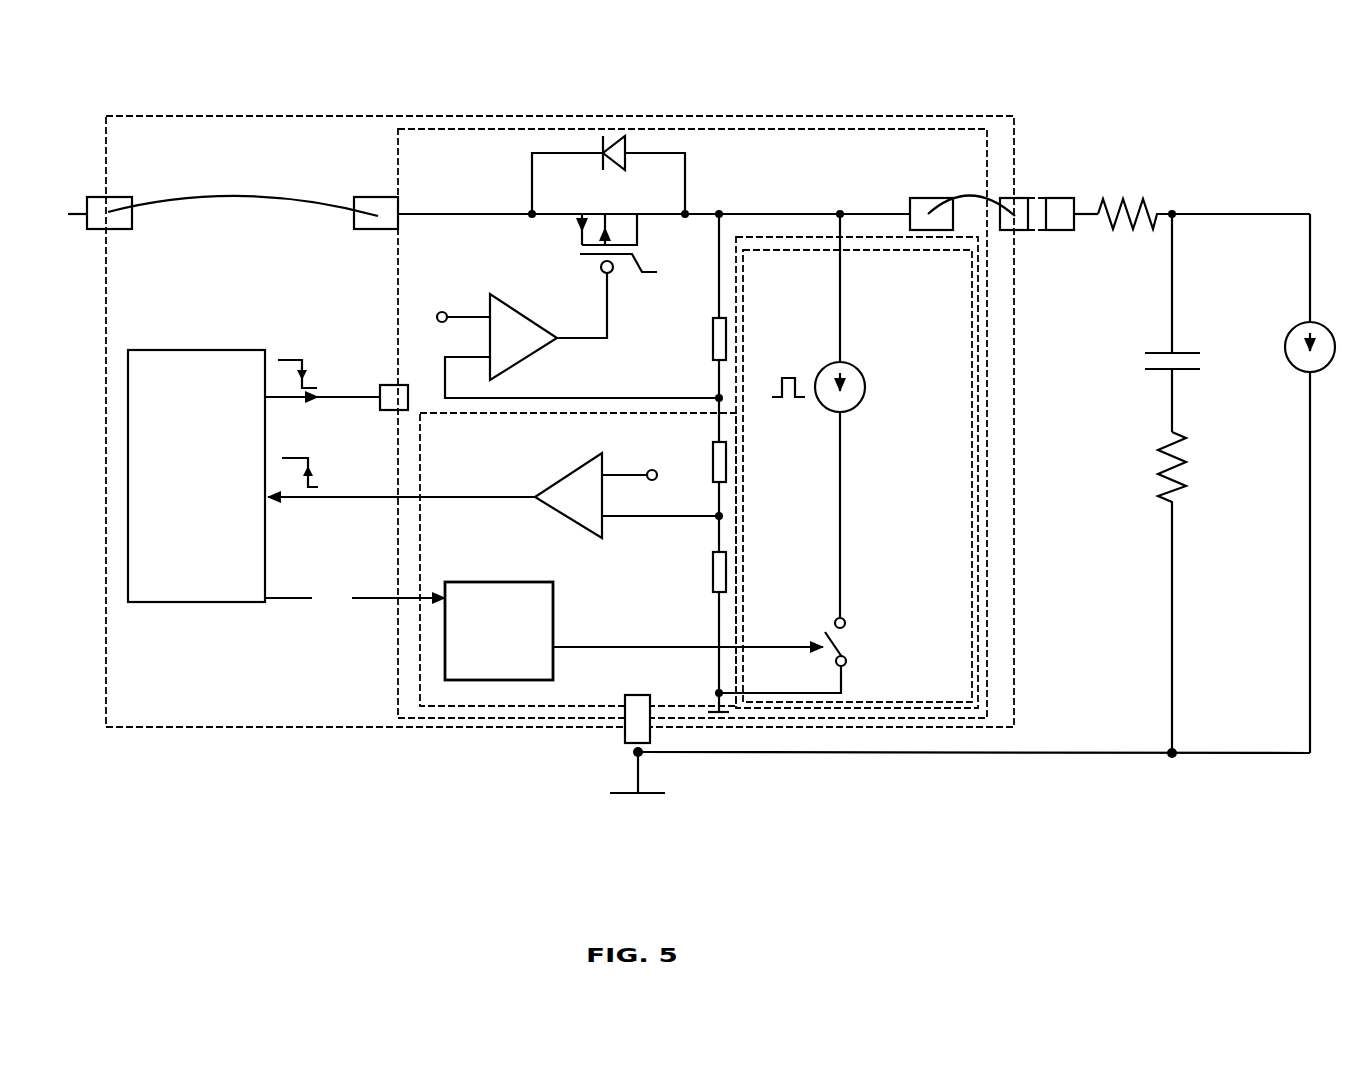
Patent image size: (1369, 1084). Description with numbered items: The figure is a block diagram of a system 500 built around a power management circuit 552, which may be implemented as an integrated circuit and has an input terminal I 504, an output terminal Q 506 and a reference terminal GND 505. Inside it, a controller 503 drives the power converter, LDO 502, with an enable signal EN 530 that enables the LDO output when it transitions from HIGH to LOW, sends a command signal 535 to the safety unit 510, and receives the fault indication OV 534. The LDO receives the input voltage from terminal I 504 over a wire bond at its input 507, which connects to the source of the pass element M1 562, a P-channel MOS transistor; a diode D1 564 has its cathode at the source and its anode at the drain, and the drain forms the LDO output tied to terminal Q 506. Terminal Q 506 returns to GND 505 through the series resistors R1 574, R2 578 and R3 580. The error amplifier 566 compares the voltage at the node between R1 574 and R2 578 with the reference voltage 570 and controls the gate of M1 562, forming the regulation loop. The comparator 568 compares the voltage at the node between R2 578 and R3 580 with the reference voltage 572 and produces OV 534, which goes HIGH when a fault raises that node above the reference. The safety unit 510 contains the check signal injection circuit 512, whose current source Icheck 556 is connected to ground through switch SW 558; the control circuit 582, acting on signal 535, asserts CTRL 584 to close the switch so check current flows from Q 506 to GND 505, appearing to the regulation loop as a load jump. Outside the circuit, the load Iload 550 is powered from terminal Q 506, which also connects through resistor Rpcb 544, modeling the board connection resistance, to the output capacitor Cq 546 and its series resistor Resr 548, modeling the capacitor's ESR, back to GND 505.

The system 500 is at (270, 88).
The LDO 502 is at (431, 194).
The controller 503 is at (178, 501).
The input terminal I 504 is at (106, 192).
The reference terminal GND 505 is at (578, 789).
The output terminal Q 506 is at (908, 184).
The input 507 is at (509, 197).
The safety unit 510 is at (536, 718).
The check signal injection circuit 512 is at (881, 359).
The enable signal EN 530 is at (334, 384).
The fault indication OV 534 is at (341, 486).
The signal 535 is at (355, 597).
The resistor Rpcb 544 is at (1103, 302).
The output capacitor Cq 546 is at (1086, 412).
The resistor Resr 548 is at (1103, 499).
The Iload 550 is at (1234, 397).
The power management circuit 552 is at (221, 714).
The current source Icheck 556 is at (869, 441).
The switch SW 558 is at (871, 676).
The pass element M1 562 is at (523, 276).
The diode D1 564 is at (634, 209).
The error amplifier 566 is at (527, 365).
The comparator 568 is at (566, 460).
The reference voltage 570 is at (434, 309).
The reference voltage 572 is at (606, 501).
The resistor R1 574 is at (661, 352).
The resistor R2 578 is at (673, 466).
The resistor R3 580 is at (669, 582).
The control circuit 582 is at (481, 662).
The CTRL 584 is at (599, 674).